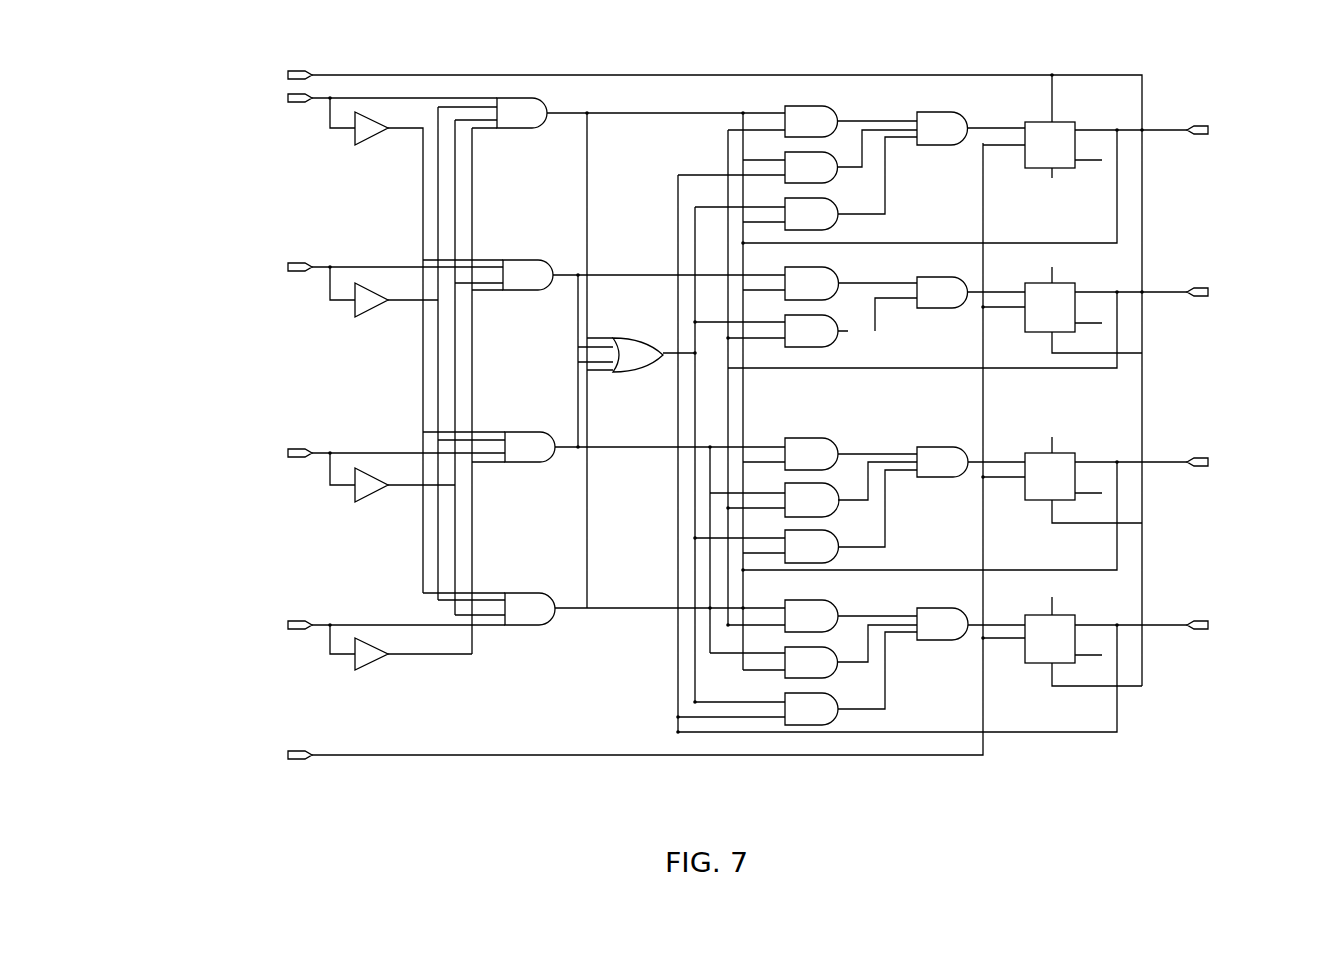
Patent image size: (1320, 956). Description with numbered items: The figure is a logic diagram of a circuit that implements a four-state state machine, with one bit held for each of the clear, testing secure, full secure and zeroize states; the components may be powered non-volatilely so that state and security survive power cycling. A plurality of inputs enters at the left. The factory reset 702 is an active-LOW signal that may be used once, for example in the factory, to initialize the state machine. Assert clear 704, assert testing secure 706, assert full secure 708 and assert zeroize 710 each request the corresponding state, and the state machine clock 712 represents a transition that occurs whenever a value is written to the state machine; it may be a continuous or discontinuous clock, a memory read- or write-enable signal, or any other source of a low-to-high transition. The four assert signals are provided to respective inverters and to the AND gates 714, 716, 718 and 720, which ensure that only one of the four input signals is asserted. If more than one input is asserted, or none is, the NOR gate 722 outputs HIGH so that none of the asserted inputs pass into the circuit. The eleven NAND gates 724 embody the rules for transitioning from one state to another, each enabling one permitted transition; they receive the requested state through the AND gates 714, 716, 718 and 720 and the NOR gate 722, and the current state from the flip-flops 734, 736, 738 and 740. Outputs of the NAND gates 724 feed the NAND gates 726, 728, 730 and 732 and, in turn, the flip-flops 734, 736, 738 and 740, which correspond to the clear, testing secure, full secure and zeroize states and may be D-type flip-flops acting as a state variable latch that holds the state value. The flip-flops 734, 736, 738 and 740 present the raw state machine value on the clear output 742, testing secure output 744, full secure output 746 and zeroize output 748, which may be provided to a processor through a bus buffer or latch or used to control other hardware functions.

The factory reset 702 is at (217, 56).
The assert clear 704 is at (210, 91).
The assert testing secure 706 is at (200, 256).
The assert full secure 708 is at (188, 438).
The assert zeroize 710 is at (182, 606).
The state machine clock 712 is at (168, 750).
The AND gate 714 is at (518, 90).
The AND gate 716 is at (529, 256).
The AND gate 718 is at (522, 430).
The AND gate 720 is at (522, 590).
The NOR gate 722 is at (633, 333).
The NAND gates 724 is at (806, 85).
The NAND gate 726 is at (937, 102).
The NAND gate 728 is at (933, 277).
The NAND gate 730 is at (927, 445).
The NAND gate 732 is at (938, 600).
The flip-flop 734 is at (1075, 120).
The flip-flop 736 is at (1075, 292).
The flip-flop 738 is at (1071, 453).
The flip-flop 740 is at (1071, 617).
The clear output 742 is at (1227, 108).
The testing secure output 744 is at (1252, 270).
The full secure output 746 is at (1227, 432).
The zeroize output 748 is at (1240, 597).